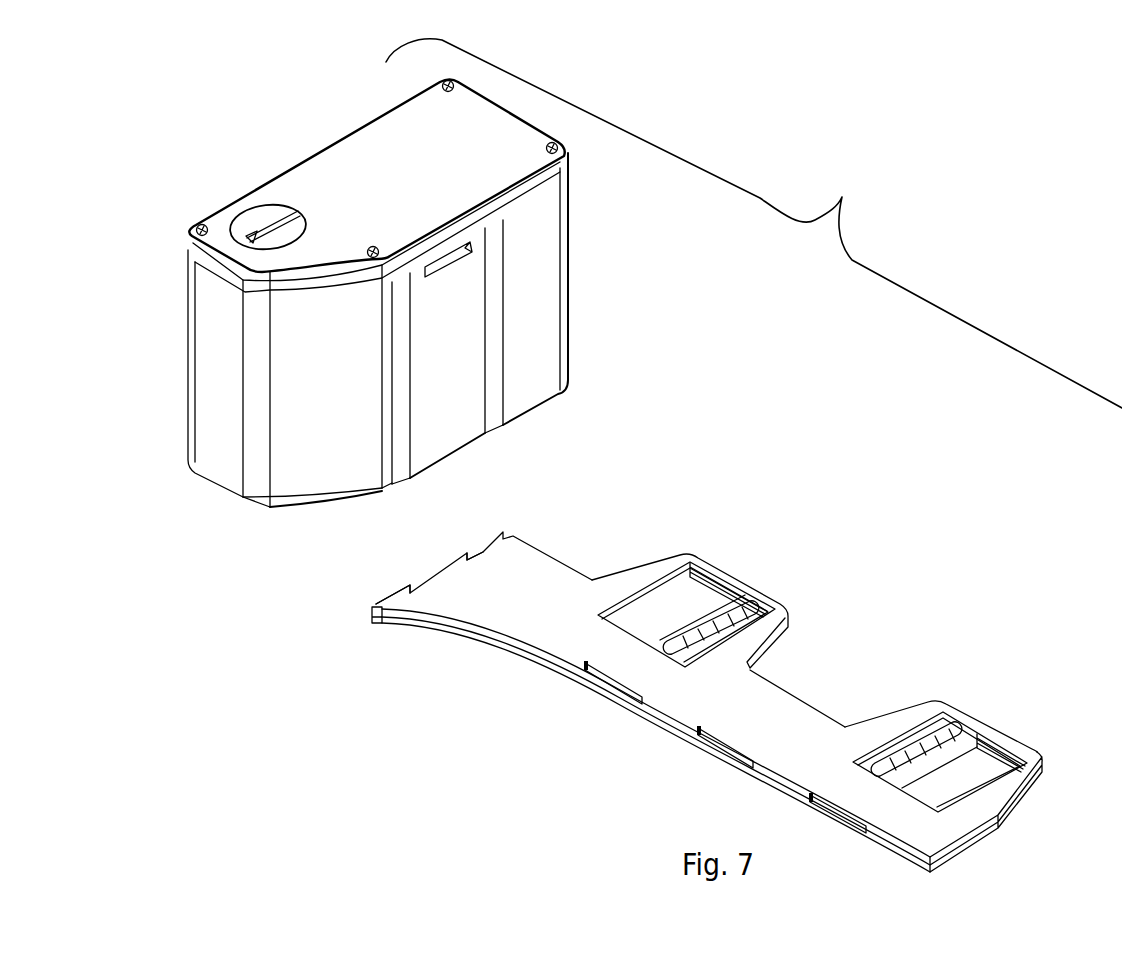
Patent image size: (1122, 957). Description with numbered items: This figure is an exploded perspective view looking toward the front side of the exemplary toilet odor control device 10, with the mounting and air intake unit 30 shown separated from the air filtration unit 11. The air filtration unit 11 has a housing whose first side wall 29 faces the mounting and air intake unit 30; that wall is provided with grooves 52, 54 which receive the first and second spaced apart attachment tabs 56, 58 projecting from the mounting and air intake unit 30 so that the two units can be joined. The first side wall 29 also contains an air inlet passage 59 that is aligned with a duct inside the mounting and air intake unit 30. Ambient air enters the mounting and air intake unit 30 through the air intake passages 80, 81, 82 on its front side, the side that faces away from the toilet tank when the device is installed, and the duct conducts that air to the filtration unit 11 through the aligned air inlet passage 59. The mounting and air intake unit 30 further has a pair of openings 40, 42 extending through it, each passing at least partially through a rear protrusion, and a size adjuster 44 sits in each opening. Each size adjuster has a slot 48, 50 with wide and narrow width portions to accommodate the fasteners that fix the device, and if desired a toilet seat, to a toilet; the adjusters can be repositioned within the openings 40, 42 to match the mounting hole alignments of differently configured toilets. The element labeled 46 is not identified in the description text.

The toilet odor control device 10 is at (754, 223).
The air filtration unit 11 is at (543, 320).
The first side wall 29 is at (538, 232).
The air inlet passage 59 is at (466, 250).
The groove 52 is at (500, 433).
The groove 54 is at (398, 489).
The mounting and air intake unit 30 is at (782, 710).
The first attachment tab 56 is at (378, 606).
The second attachment tab 58 is at (483, 548).
The opening 40 is at (686, 597).
The size adjuster 44 is at (772, 601).
The size adjuster slot 48 is at (742, 610).
The opening 42 is at (1027, 760).
The pocket floor 46 is at (968, 770).
The slot 50 is at (950, 728).
The air intake passage 80 is at (618, 690).
The air intake passage 81 is at (716, 744).
The air intake passage 82 is at (830, 812).